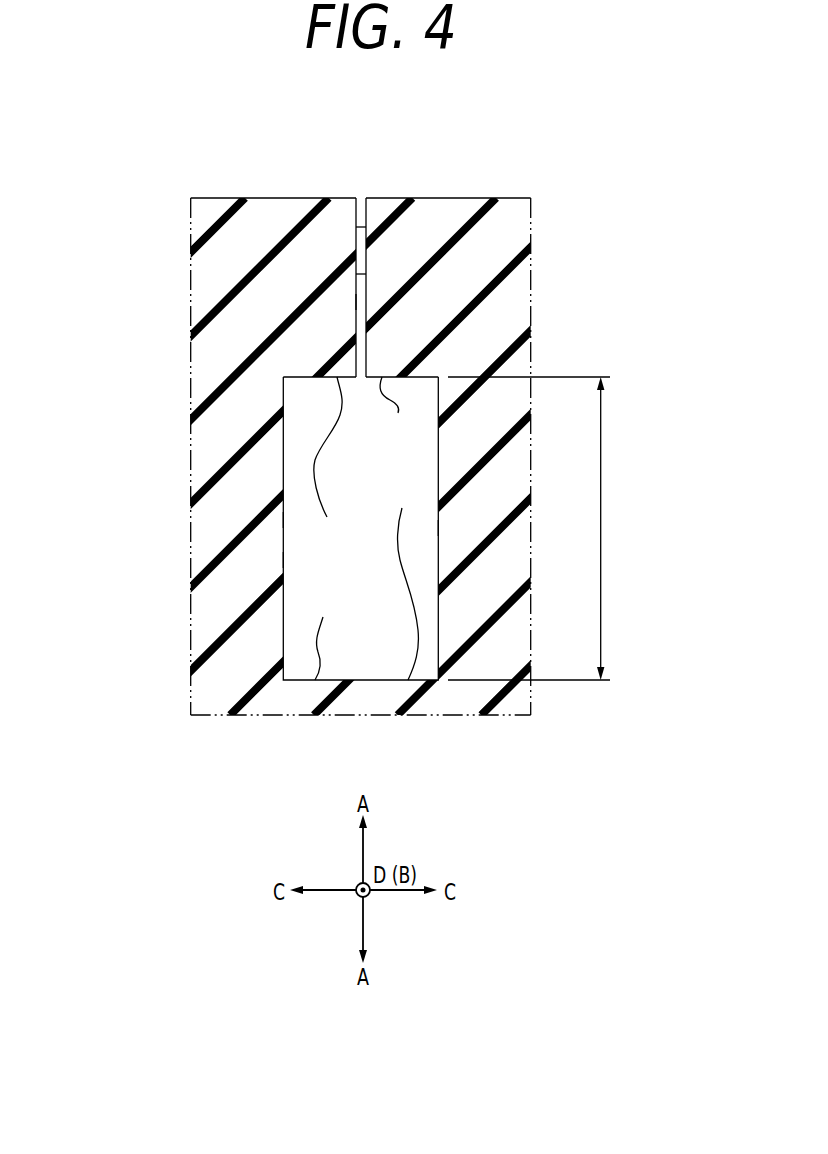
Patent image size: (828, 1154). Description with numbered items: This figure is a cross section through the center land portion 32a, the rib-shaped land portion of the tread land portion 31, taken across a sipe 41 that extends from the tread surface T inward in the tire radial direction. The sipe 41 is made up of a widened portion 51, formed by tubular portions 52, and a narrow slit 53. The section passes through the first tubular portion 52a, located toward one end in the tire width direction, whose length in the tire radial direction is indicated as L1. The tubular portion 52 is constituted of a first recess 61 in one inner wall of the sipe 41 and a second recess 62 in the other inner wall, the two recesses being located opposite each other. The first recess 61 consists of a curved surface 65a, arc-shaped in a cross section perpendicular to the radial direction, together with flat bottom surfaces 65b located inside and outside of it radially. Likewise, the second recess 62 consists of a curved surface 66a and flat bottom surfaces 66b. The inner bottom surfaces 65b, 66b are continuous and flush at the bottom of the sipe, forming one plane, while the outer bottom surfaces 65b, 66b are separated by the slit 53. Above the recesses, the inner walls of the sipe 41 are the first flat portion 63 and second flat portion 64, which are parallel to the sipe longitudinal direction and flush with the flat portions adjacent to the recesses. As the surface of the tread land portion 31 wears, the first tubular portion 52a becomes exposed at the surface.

The tread surface T is at (215, 197).
The tread land portion 31 is at (228, 347).
The center land portion 32a is at (414, 456).
The sipe 41 is at (361, 188).
The widened portion 51 is at (369, 657).
The tubular portion 52 is at (373, 570).
The first tubular portion 52a is at (373, 570).
The slit 53 is at (352, 302).
The first recess 61 is at (380, 413).
The second recess 62 is at (345, 520).
The first flat portion 63 is at (358, 227).
The second flat portion 64 is at (366, 274).
The curved surface 65a is at (437, 528).
The flat bottom surface 65b is at (397, 444).
The curved surface 66a is at (283, 520).
The flat bottom surface 66b is at (313, 563).
The length of first tubular portion L1 is at (540, 528).